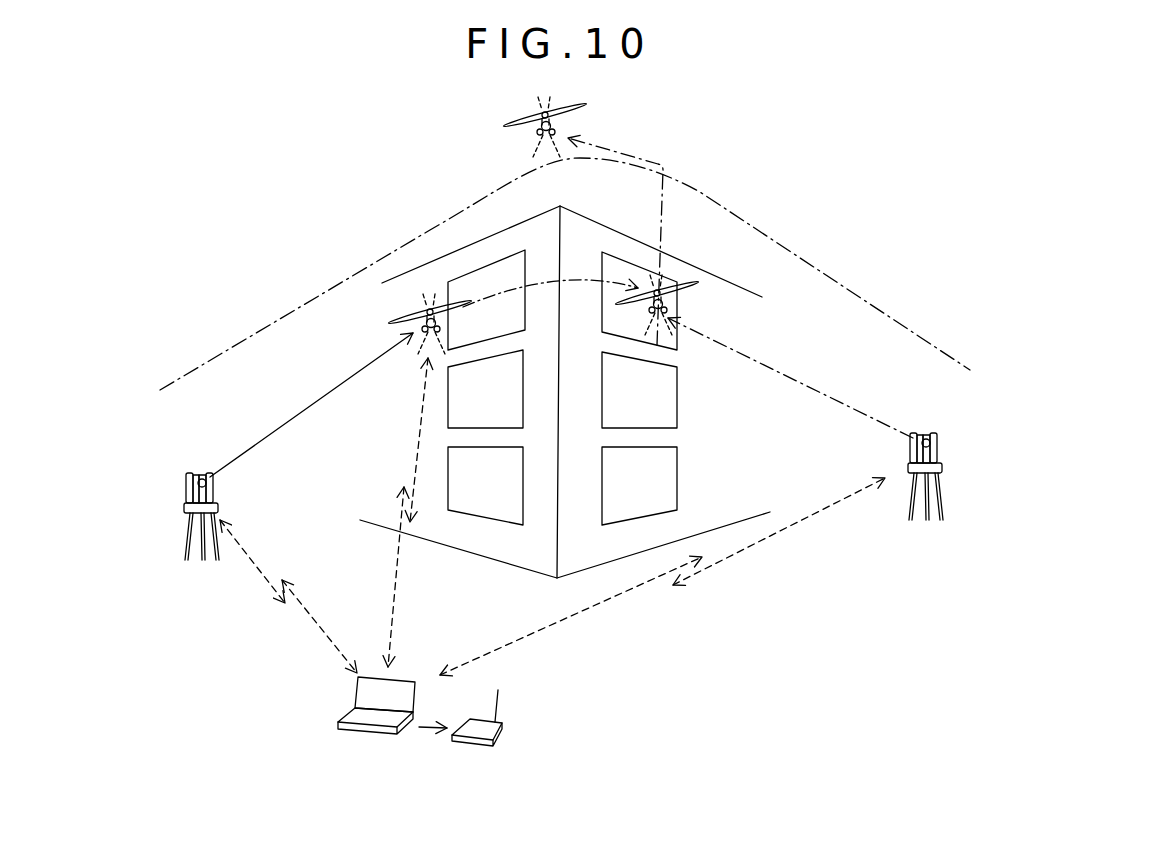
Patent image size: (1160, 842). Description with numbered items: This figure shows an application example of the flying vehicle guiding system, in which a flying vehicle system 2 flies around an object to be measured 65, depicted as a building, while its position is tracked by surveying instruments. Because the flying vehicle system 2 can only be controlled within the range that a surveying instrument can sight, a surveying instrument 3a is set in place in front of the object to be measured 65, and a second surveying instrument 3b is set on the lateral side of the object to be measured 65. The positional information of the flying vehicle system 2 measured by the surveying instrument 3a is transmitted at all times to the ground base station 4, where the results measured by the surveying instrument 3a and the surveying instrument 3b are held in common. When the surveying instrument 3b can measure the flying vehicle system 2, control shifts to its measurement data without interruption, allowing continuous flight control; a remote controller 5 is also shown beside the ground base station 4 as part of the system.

The object to be measured 65 is at (493, 235).
The flying vehicle system 2 is at (407, 316).
The surveying instrument 3a is at (222, 507).
The surveying instrument 3b is at (910, 466).
The ground base station 4 is at (402, 677).
The remote controller 5 is at (500, 722).